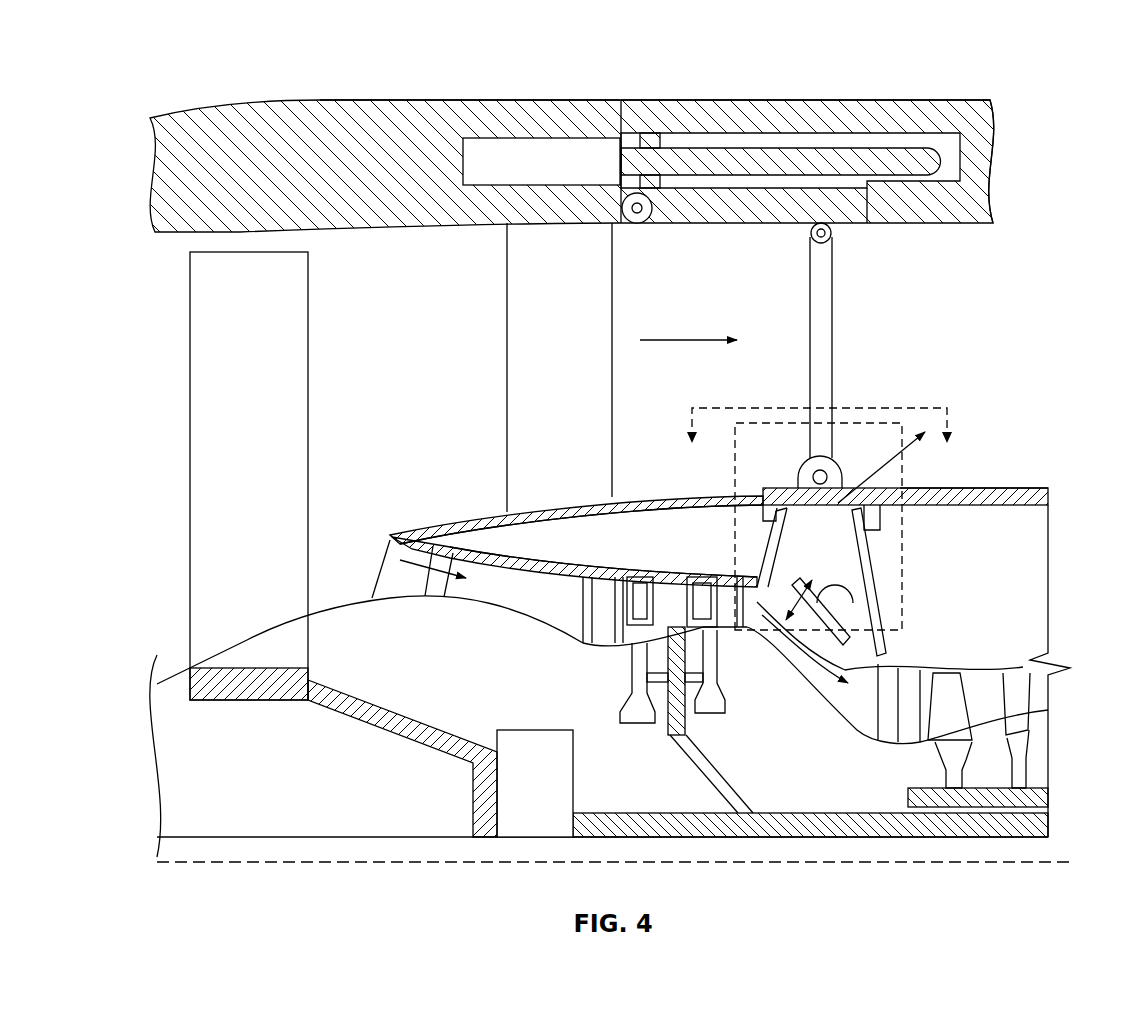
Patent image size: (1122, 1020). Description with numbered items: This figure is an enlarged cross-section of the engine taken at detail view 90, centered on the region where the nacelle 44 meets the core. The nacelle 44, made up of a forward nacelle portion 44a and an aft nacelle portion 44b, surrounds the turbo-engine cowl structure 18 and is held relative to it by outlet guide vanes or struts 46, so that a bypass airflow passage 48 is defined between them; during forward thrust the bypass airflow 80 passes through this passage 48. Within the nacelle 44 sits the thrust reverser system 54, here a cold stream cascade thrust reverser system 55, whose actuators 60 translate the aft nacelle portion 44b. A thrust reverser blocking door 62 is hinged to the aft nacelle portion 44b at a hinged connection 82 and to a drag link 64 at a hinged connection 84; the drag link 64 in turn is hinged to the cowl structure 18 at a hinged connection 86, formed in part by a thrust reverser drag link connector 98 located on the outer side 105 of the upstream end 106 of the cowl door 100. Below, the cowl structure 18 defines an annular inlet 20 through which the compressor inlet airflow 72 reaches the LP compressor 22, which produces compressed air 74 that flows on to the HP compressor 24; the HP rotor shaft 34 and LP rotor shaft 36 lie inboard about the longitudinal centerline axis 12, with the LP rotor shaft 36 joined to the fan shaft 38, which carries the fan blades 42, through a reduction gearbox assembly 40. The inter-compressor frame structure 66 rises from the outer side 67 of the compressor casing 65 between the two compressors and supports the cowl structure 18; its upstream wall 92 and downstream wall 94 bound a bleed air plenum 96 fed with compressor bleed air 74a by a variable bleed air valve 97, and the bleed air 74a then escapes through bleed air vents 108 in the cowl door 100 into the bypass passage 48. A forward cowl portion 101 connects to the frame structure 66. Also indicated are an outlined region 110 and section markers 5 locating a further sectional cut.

The longitudinal centerline axis 12 is at (1075, 862).
The turbo-engine cowl structure 18 is at (965, 488).
The annular inlet 20 is at (380, 576).
The low-pressure compressor 22 is at (608, 650).
The high-pressure compressor 24 is at (985, 667).
The HP rotor shaft 34 is at (957, 800).
The LP rotor shaft 36 is at (680, 832).
The fan shaft 38 is at (372, 735).
The reduction gearbox assembly 40 is at (517, 738).
The fan blades 42 is at (197, 345).
The nacelle 44 is at (221, 99).
The forward nacelle portion 44a is at (385, 100).
The aft nacelle portion 44b is at (882, 100).
The outlet guide vanes or struts 46 is at (510, 343).
The bypass airflow passage 48 is at (771, 266).
The thrust reverser system 54 is at (695, 130).
The cold stream cascade thrust reverser system 55 is at (650, 160).
The actuators 60 is at (537, 150).
The thrust reverser blocking doors 62 is at (705, 213).
The drag links 64 is at (833, 279).
The compressor casing 65 is at (587, 565).
The inter-compressor frame structure 66 is at (869, 553).
The outer side of compressor casing 67 is at (623, 548).
The compressor inlet airflow 72 is at (410, 548).
The compressed air 74 is at (826, 686).
The compressor bleed air 74a is at (903, 440).
The bypass airflow 80 is at (670, 340).
The hinged connection 82 is at (638, 215).
The hinged connection 84 is at (830, 236).
The hinged connection 86 is at (800, 457).
The detail view 90 is at (783, 84).
The upstream wall 92 is at (760, 537).
The downstream wall 94 is at (868, 588).
The bleed air plenum 96 is at (790, 495).
The variable bleed air valves 97 is at (880, 630).
The thrust reverser drag link connectors 98 is at (838, 486).
The cowl door 100 is at (1030, 489).
The forward cowl portion 101 is at (480, 525).
The outer side 105 is at (1000, 485).
The upstream end 106 is at (880, 482).
The bleed air vents 108 is at (790, 583).
The section region 110 is at (733, 433).
The section line 5- 5 is at (820, 441).